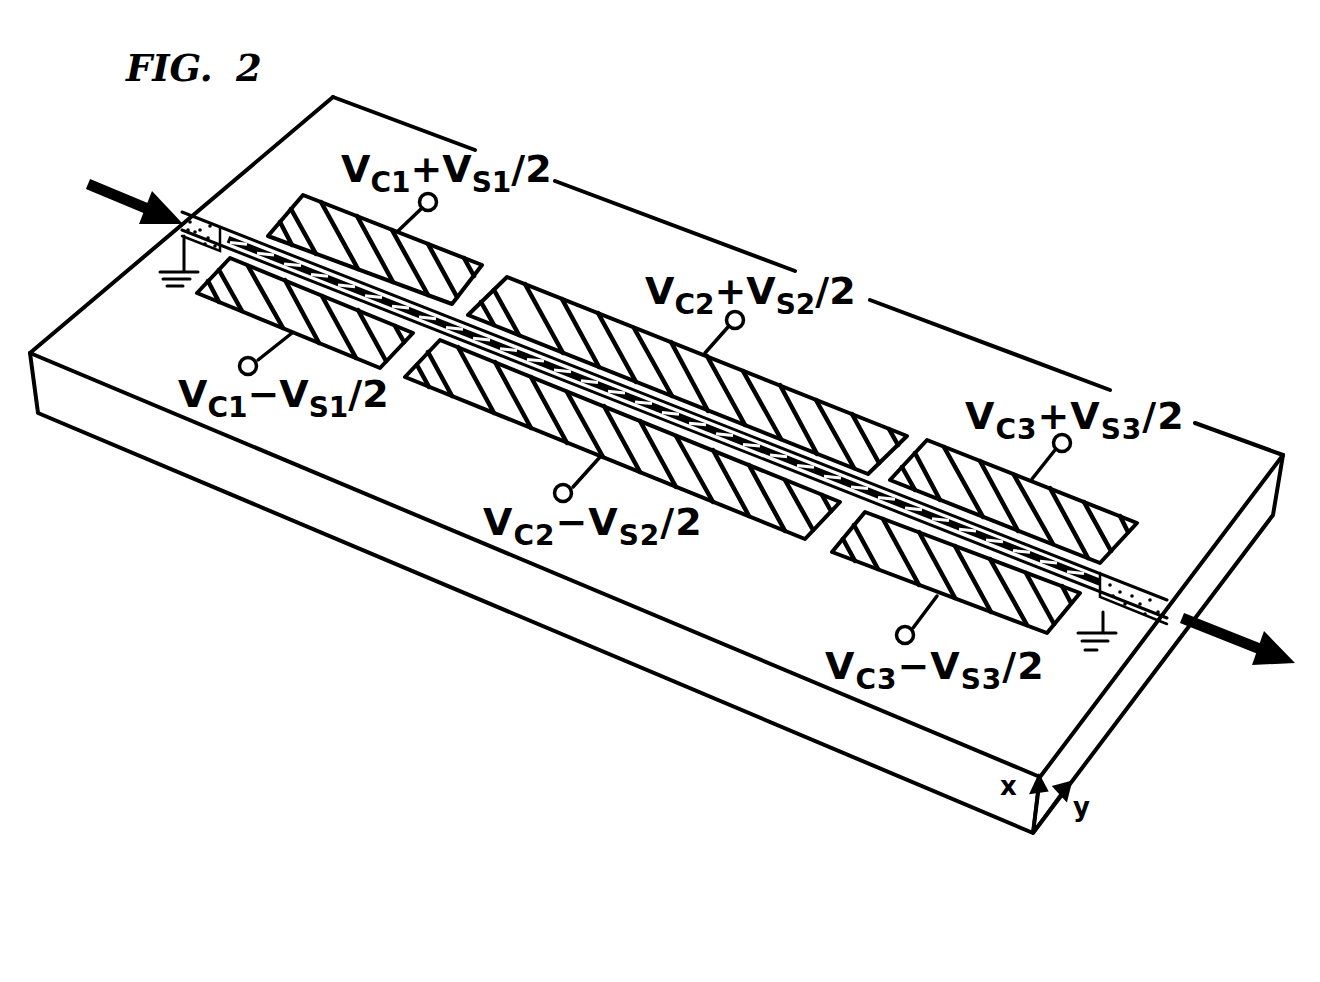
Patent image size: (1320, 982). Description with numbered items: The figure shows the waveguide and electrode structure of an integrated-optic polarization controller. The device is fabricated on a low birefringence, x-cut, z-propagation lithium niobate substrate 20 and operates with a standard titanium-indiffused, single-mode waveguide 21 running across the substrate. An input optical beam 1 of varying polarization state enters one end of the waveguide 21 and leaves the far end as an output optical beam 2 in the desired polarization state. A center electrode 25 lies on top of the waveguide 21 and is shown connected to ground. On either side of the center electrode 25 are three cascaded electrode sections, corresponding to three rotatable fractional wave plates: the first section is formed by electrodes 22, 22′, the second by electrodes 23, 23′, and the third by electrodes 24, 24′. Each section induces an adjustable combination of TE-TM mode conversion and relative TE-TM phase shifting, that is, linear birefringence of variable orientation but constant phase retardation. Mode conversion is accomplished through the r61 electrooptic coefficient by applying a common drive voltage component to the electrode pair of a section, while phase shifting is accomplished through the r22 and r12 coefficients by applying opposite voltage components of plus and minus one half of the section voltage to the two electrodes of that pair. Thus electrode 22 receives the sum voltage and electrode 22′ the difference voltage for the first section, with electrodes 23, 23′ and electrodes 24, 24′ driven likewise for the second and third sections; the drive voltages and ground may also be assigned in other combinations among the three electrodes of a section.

The input optical beam 1 is at (117, 187).
The output optical beam 2 is at (1210, 640).
The LiNbO3 substrate 20 is at (928, 770).
The waveguide 21 is at (1167, 598).
The electrode 22 is at (443, 268).
The electrode 22′ is at (247, 298).
The electrode 23 is at (555, 313).
The electrode 23′ is at (470, 387).
The electrode 24 is at (928, 447).
The electrode 24′ is at (870, 548).
The center electrode 25 is at (268, 252).